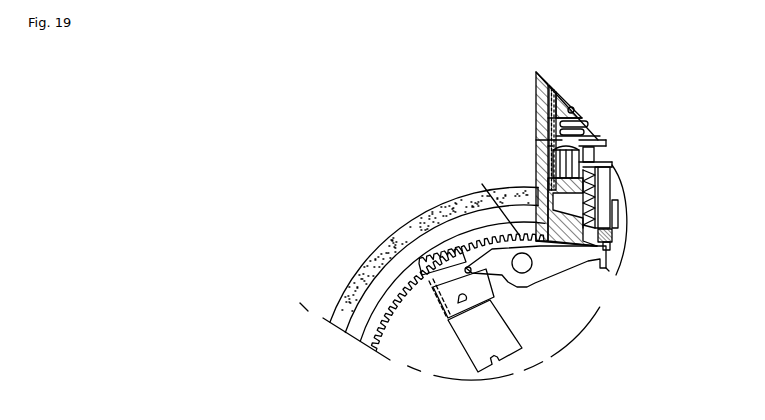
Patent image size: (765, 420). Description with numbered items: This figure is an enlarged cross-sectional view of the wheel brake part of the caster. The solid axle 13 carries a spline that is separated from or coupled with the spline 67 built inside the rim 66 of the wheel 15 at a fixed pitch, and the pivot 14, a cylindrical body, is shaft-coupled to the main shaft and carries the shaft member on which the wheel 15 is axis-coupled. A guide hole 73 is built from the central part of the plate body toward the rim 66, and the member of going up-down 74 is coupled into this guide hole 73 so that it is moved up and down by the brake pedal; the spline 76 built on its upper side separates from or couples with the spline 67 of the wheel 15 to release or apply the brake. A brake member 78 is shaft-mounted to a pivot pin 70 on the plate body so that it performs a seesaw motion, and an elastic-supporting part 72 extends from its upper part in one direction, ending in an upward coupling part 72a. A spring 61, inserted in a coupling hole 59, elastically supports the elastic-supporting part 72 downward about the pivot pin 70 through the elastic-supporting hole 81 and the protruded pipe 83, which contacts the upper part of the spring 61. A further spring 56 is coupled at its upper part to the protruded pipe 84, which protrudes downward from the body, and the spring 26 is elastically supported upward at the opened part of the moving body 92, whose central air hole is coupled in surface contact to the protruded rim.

The solid axle 13 is at (541, 93).
The pivot 14 is at (547, 152).
The wheel 15 is at (363, 277).
The spring 26 is at (574, 109).
The spring 56 is at (538, 185).
The coupling hole 59 is at (612, 236).
The spring 61 is at (610, 246).
The rim 66 is at (425, 262).
The spline 67 is at (443, 262).
The pivot pin 70 is at (524, 267).
The elastic-supporting part 72 is at (566, 261).
The coupling part 72a is at (620, 277).
The guide hole 73 is at (479, 339).
The member of going up-down 74 is at (437, 300).
The spline 76 is at (458, 251).
The brake member 78 is at (479, 274).
The elastic-supporting hole 81 is at (606, 158).
The protruded pipe 83 is at (610, 189).
The protruded pipe 84 is at (612, 165).
The moving body 92 is at (545, 118).